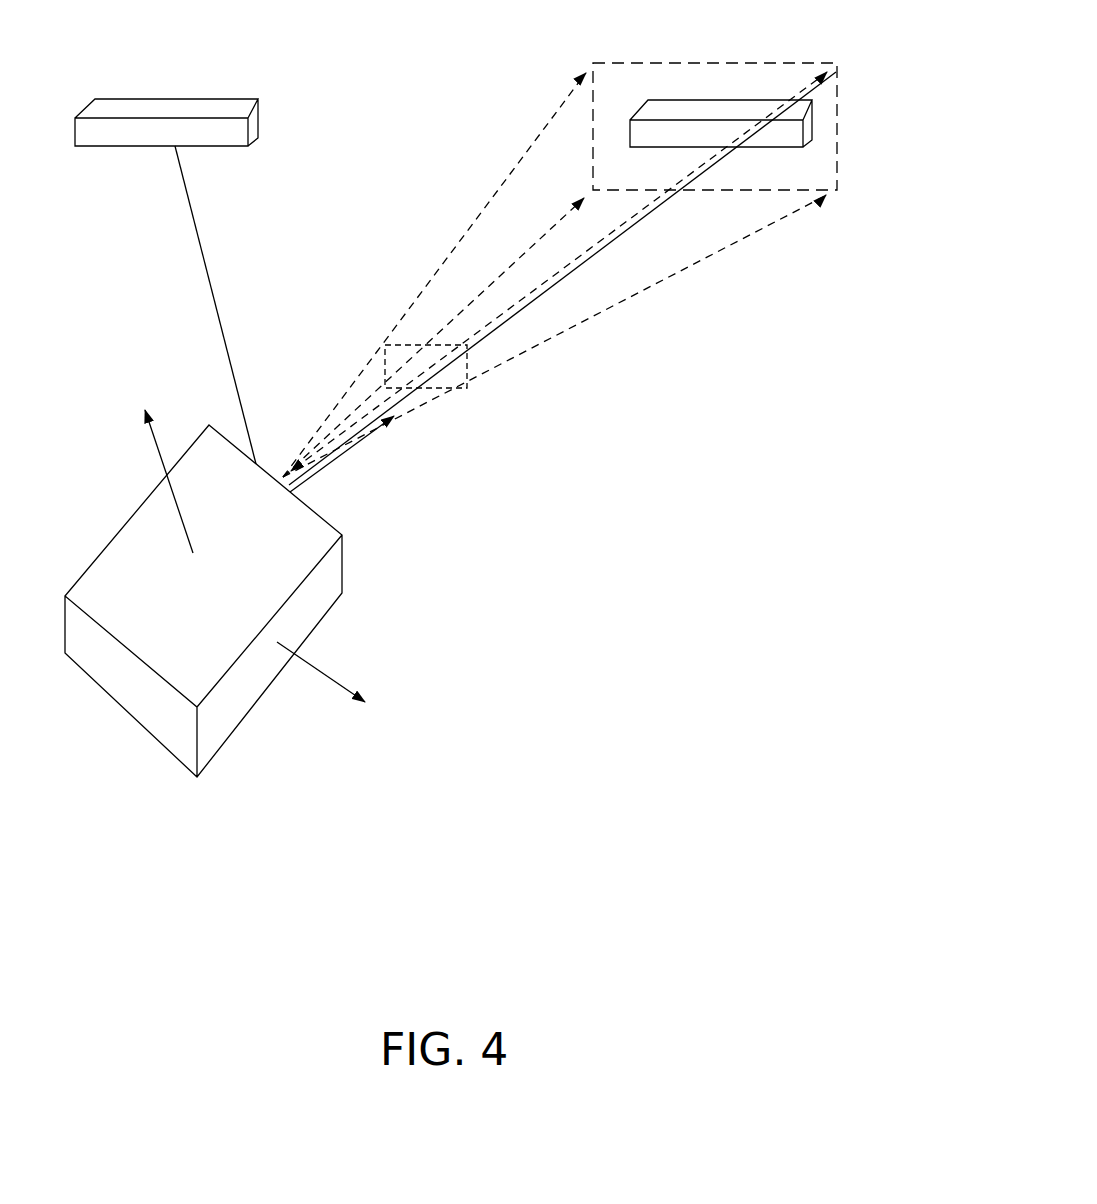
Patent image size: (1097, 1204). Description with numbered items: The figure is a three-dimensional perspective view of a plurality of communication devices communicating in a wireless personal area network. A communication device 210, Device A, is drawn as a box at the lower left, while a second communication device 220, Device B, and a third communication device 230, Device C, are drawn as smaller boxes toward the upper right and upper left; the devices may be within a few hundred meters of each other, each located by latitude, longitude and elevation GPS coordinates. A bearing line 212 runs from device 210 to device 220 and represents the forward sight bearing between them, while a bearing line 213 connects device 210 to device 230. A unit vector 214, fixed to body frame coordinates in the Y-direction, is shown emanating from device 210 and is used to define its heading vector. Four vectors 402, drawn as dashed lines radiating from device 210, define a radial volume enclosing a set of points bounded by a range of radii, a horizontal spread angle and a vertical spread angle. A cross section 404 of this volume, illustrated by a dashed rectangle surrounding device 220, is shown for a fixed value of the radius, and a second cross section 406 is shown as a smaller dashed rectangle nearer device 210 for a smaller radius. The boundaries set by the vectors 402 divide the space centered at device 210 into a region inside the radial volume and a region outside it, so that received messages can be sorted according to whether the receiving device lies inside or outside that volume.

The communication device 210 is at (332, 546).
The bearing line 212 is at (622, 213).
The bearing line 213 is at (203, 250).
The unit vector 214 is at (380, 428).
The communication device 220 is at (693, 102).
The communication device 230 is at (258, 99).
The vectors 402 is at (567, 214).
The cross section 404 is at (803, 63).
The second cross section 406 is at (422, 343).